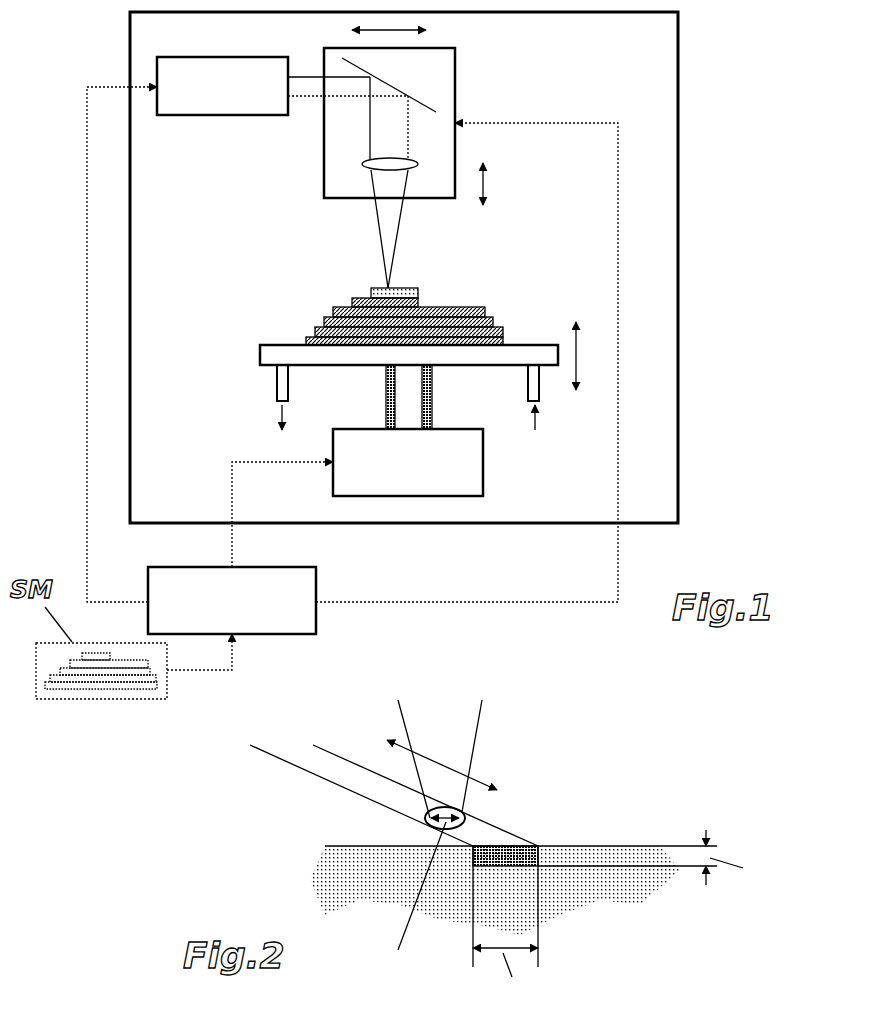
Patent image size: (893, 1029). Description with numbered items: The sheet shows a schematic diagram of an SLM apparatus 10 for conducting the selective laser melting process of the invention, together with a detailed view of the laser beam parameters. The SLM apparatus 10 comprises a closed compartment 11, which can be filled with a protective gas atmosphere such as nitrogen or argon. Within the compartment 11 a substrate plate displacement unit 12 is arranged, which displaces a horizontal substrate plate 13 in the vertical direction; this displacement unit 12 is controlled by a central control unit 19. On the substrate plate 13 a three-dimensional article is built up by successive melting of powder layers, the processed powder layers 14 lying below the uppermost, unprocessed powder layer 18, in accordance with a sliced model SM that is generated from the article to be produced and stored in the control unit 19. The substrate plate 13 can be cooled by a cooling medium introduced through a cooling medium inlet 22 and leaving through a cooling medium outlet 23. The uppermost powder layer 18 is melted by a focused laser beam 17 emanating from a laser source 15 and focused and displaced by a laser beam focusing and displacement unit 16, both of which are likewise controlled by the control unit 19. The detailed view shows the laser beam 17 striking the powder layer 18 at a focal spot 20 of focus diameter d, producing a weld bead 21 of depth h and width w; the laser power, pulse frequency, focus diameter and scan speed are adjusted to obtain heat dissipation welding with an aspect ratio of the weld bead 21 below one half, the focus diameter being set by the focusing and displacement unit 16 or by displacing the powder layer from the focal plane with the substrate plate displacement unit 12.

In FIG. 1, the SLM apparatus 10 is at (215, 273).
In FIG. 1, the compartment 11 is at (677, 326).
In FIG. 1, the substrate plate displacement unit 12 is at (408, 430).
In FIG. 1, the substrate plate 13 is at (270, 355).
In FIG. 1, the processed powder layer 14 is at (315, 327).
In FIG. 1, the laser source 15 is at (282, 86).
In FIG. 1, the laser beam focusing and displacement unit 16 is at (333, 178).
In FIG. 1, the laser beam 17 is at (389, 233).
In FIG. 2, the laser beam 17 is at (473, 727).
In FIG. 1, the powder layer (unprocessed) 18 is at (420, 290).
In FIG. 2, the powder layer (unprocessed) 18 is at (322, 873).
In FIG. 1, the control unit 19 is at (352, 378).
In FIG. 2, the focal spot 20 is at (468, 815).
In FIG. 2, the weld bead 21 is at (313, 763).
In FIG. 1, the cooling medium inlet 22 is at (540, 392).
In FIG. 1, the cooling medium outlet 23 is at (277, 392).